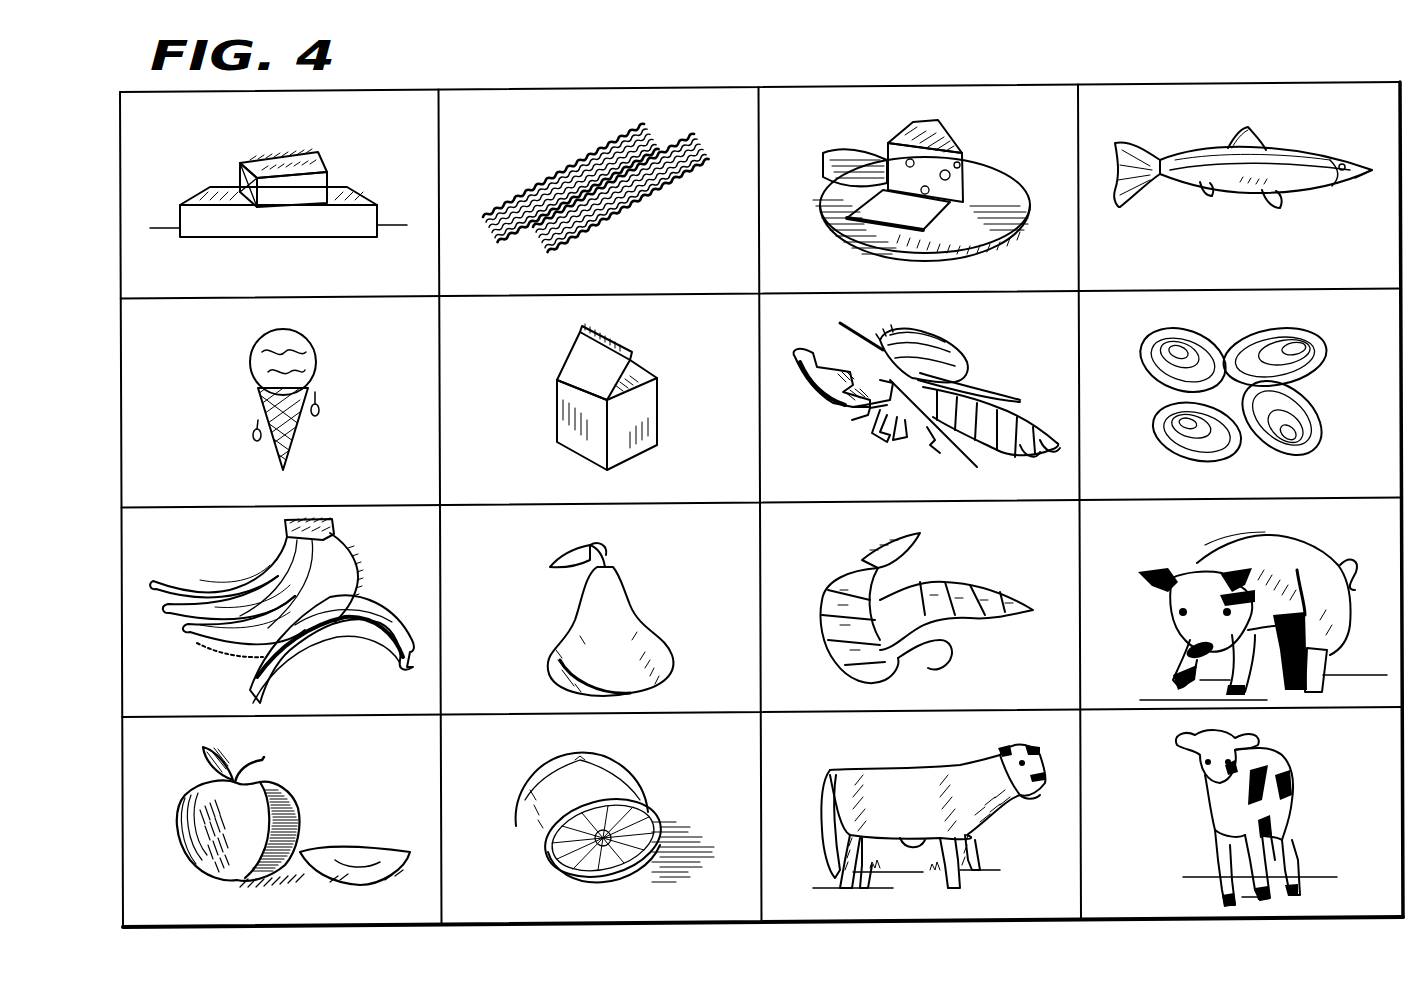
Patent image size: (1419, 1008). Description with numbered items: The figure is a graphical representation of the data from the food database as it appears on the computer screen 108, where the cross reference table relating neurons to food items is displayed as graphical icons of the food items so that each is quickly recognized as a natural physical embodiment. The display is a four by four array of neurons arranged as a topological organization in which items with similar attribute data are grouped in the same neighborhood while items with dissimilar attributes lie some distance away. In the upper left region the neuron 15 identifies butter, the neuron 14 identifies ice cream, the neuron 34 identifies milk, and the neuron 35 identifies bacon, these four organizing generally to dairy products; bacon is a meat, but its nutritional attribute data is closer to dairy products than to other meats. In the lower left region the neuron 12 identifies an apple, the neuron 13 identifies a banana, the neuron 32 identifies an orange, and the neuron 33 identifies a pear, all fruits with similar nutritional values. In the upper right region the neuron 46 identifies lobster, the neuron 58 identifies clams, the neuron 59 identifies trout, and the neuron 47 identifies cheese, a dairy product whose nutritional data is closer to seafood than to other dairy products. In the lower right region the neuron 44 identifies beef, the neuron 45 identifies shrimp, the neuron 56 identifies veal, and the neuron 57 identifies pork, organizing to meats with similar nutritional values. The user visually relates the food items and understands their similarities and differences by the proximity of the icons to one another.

The computer screen 108 is at (478, 69).
The neuron 12 is at (275, 834).
The neuron 13 is at (275, 615).
The neuron 14 is at (227, 415).
The neuron 15 is at (270, 220).
The neuron 32 is at (586, 836).
The neuron 33 is at (564, 626).
The neuron 34 is at (555, 411).
The neuron 35 is at (580, 206).
The neuron 44 is at (911, 830).
The neuron 45 is at (904, 620).
The neuron 46 is at (916, 410).
The neuron 47 is at (901, 203).
The neuron 56 is at (1217, 821).
The neuron 57 is at (1241, 618).
The neuron 58 is at (1214, 405).
The neuron 59 is at (1232, 205).